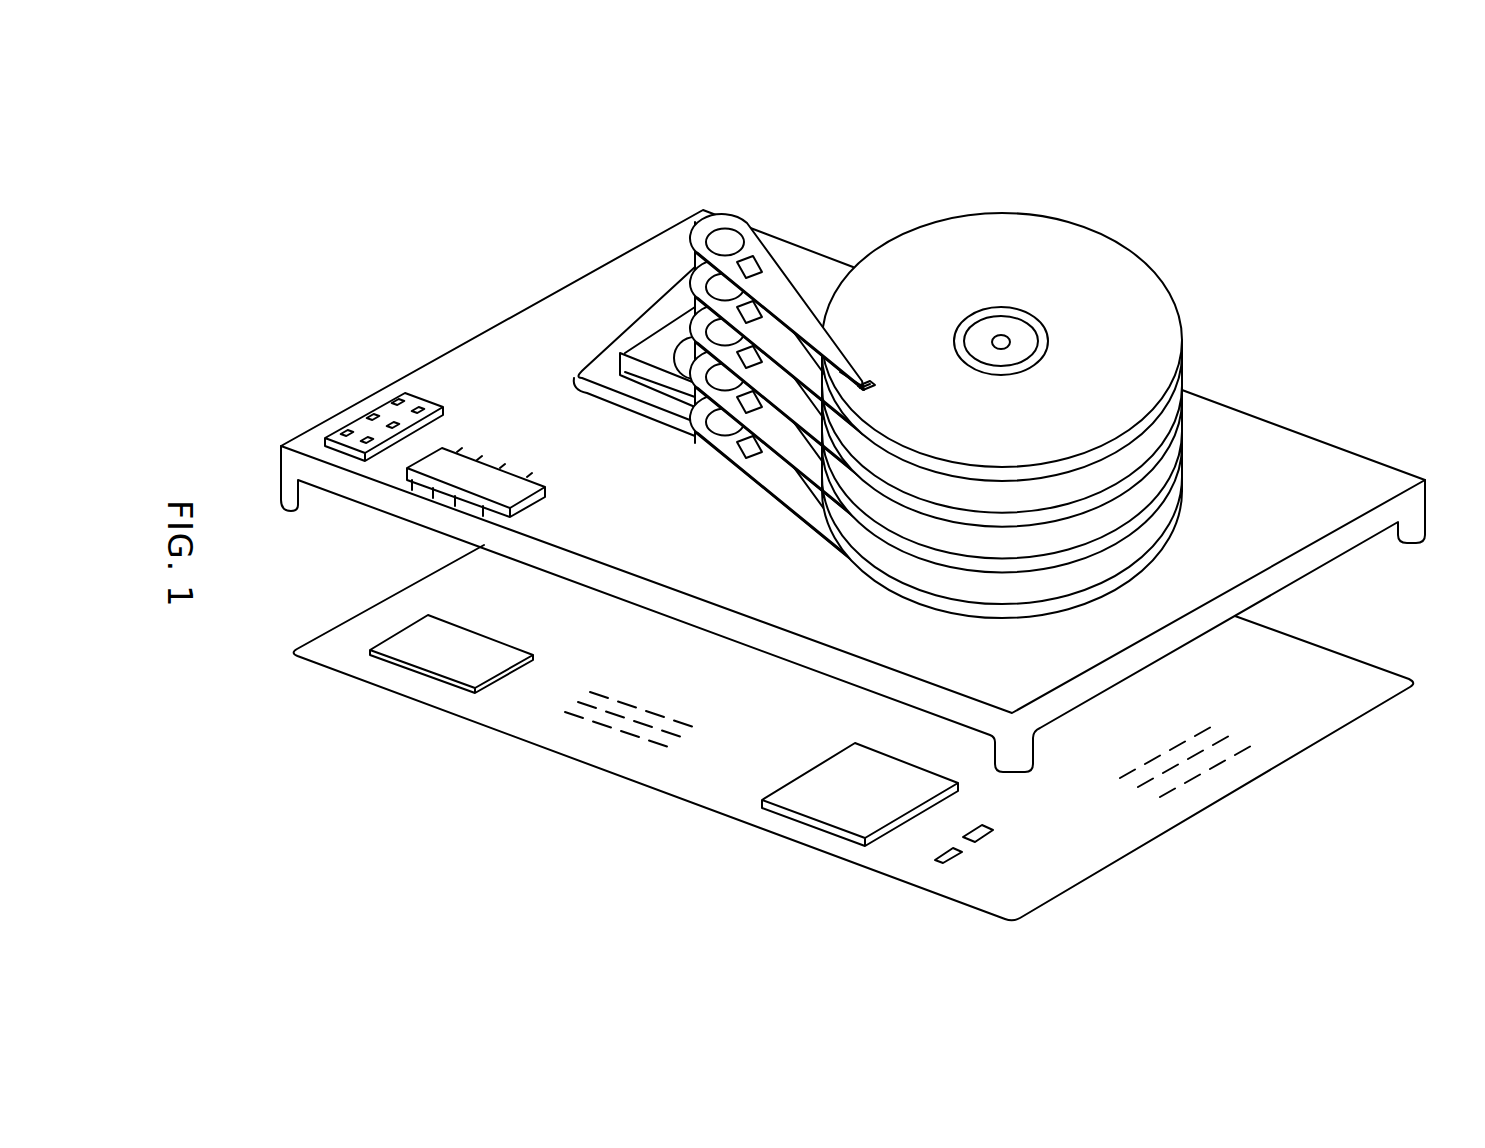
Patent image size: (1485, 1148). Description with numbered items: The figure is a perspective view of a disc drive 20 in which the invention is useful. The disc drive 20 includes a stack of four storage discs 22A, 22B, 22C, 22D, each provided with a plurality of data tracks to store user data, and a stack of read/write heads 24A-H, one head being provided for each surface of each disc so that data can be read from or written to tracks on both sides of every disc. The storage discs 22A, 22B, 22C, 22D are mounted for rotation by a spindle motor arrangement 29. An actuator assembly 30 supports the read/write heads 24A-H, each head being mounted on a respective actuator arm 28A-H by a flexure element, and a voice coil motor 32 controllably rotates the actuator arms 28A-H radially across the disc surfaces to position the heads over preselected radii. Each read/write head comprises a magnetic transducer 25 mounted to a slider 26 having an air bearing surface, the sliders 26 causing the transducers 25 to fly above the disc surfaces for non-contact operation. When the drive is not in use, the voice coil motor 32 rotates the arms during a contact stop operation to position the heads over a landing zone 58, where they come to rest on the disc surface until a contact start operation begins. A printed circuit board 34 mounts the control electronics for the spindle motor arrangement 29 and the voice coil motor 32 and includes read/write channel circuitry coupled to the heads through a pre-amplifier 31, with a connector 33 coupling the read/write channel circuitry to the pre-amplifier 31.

The disc drive 20 is at (312, 395).
The storage disc 22A is at (1170, 290).
The storage disc 22B is at (1183, 388).
The storage disc 22C is at (1183, 445).
The storage disc 22D is at (1183, 507).
The read/write heads 24A-H is at (867, 383).
The magnetic transducer 25 is at (862, 396).
The slider 26 is at (874, 389).
The actuator arms 28A-H is at (823, 325).
The spindle motor arrangement 29 is at (1002, 343).
The actuator assembly 30 is at (725, 242).
The pre-amplifier 31 is at (517, 493).
The voice coil motor 32 is at (637, 337).
The connector 33 is at (415, 400).
The printed circuit board 34 is at (1107, 825).
The landing zone 58 is at (1052, 343).